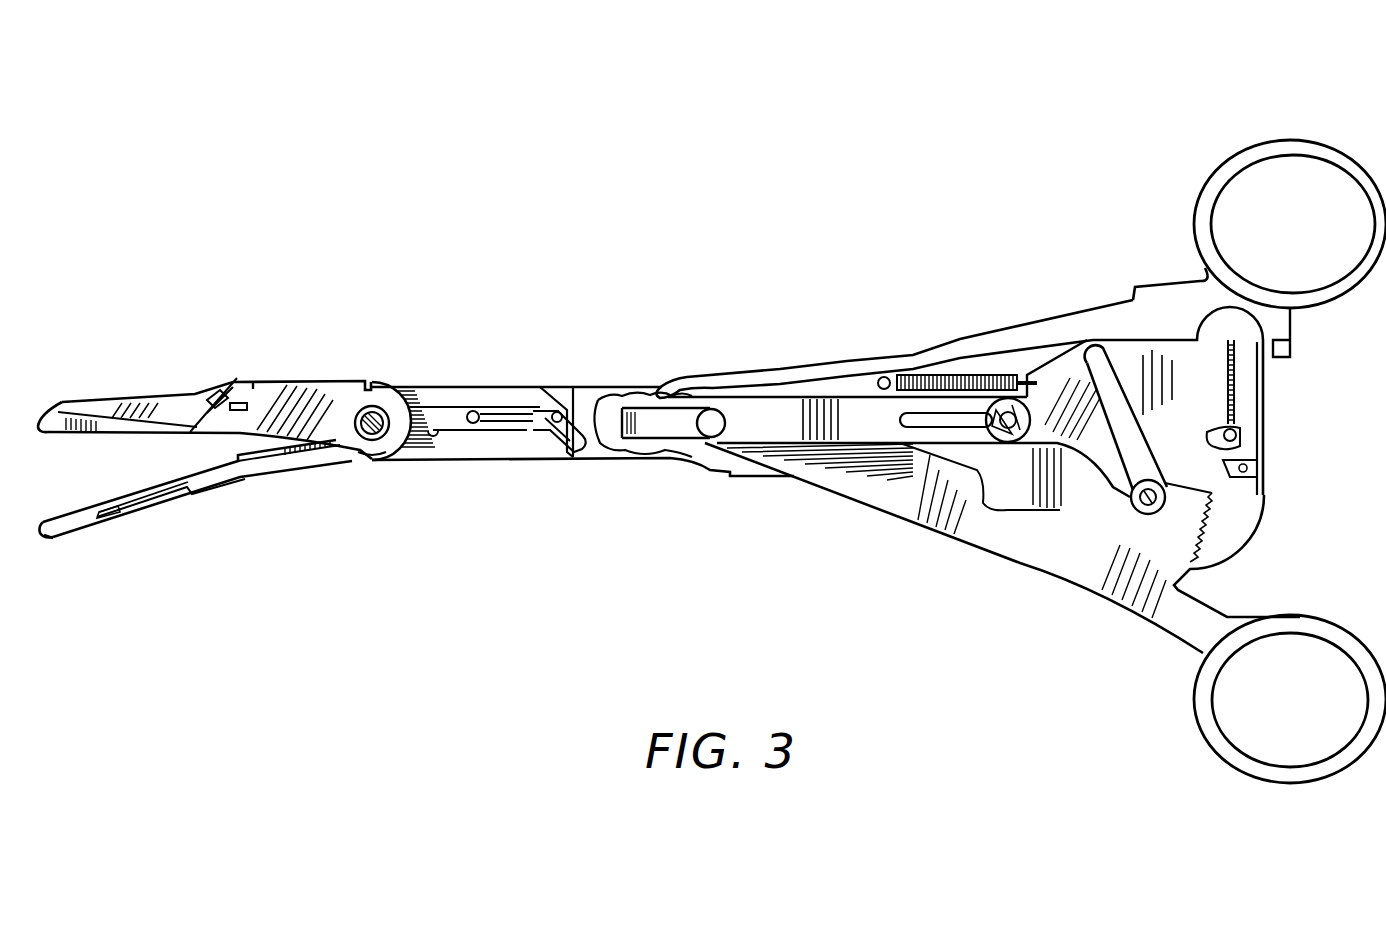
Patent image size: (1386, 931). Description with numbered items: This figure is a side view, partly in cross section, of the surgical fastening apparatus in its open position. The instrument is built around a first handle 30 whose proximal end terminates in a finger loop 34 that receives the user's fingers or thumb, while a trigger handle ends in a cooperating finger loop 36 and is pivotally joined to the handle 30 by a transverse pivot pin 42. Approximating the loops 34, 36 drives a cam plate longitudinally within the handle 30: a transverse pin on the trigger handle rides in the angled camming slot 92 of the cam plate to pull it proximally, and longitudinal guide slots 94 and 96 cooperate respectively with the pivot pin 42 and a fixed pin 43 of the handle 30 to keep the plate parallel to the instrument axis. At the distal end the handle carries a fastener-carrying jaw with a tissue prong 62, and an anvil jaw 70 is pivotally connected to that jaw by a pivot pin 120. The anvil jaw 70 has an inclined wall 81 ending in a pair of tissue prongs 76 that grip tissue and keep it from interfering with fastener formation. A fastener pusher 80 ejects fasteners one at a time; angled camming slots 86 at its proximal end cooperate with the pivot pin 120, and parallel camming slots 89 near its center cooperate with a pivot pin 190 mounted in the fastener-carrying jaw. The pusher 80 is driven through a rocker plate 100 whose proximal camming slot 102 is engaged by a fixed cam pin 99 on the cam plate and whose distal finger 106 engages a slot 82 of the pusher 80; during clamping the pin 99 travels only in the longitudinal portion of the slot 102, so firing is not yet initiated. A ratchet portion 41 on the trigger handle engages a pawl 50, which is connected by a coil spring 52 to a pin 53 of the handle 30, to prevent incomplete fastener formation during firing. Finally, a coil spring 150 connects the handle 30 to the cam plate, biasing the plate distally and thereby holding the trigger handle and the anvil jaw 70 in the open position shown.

The first handle 30 is at (974, 287).
The finger loop 34 is at (1290, 140).
The finger loop 36 is at (1271, 777).
The ratchet portion 41 is at (1215, 522).
The pivot pin 42 is at (708, 437).
The fixed pin 43 is at (1004, 443).
The pawl 50 is at (1245, 447).
The coil spring 52 is at (1240, 380).
The pin 53 is at (1295, 340).
The tissue prong 62 is at (58, 405).
The anvil jaw 70 is at (214, 514).
The tissue prongs 76 is at (44, 521).
The fastener pusher 80 is at (296, 366).
The inclined wall 81 is at (47, 540).
The slot 82 is at (256, 380).
The angled camming slots 86 is at (382, 407).
The camming slots 89 is at (226, 398).
The first angled camming slot 92 is at (1097, 348).
The longitudinal guide slot 94 is at (648, 422).
The longitudinal guide slot 96 is at (915, 428).
The fixed cam pin 99 is at (473, 411).
The rocker plate 100 is at (464, 440).
The camming slot 102 is at (522, 452).
The finger 106 is at (205, 432).
The pivot pin 120 is at (370, 447).
The coil spring 150 is at (914, 378).
The pivot pin 190 is at (210, 395).